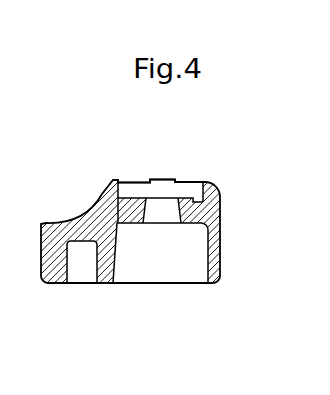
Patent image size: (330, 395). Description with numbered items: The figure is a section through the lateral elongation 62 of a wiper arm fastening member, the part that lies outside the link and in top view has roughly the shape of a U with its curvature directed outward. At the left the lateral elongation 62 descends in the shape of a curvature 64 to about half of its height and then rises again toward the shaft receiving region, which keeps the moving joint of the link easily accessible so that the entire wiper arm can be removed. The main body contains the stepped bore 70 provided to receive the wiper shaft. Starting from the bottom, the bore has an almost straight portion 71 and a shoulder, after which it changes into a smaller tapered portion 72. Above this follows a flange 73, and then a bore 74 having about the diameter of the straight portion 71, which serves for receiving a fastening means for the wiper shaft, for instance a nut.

The lateral elongation 62 is at (219, 271).
The curvature 64 is at (46, 223).
The stepped bore 70 is at (155, 268).
The straight portion 71 is at (219, 248).
The tapered portion 72 is at (198, 209).
The flange 73 is at (162, 199).
The bore 74 is at (213, 188).